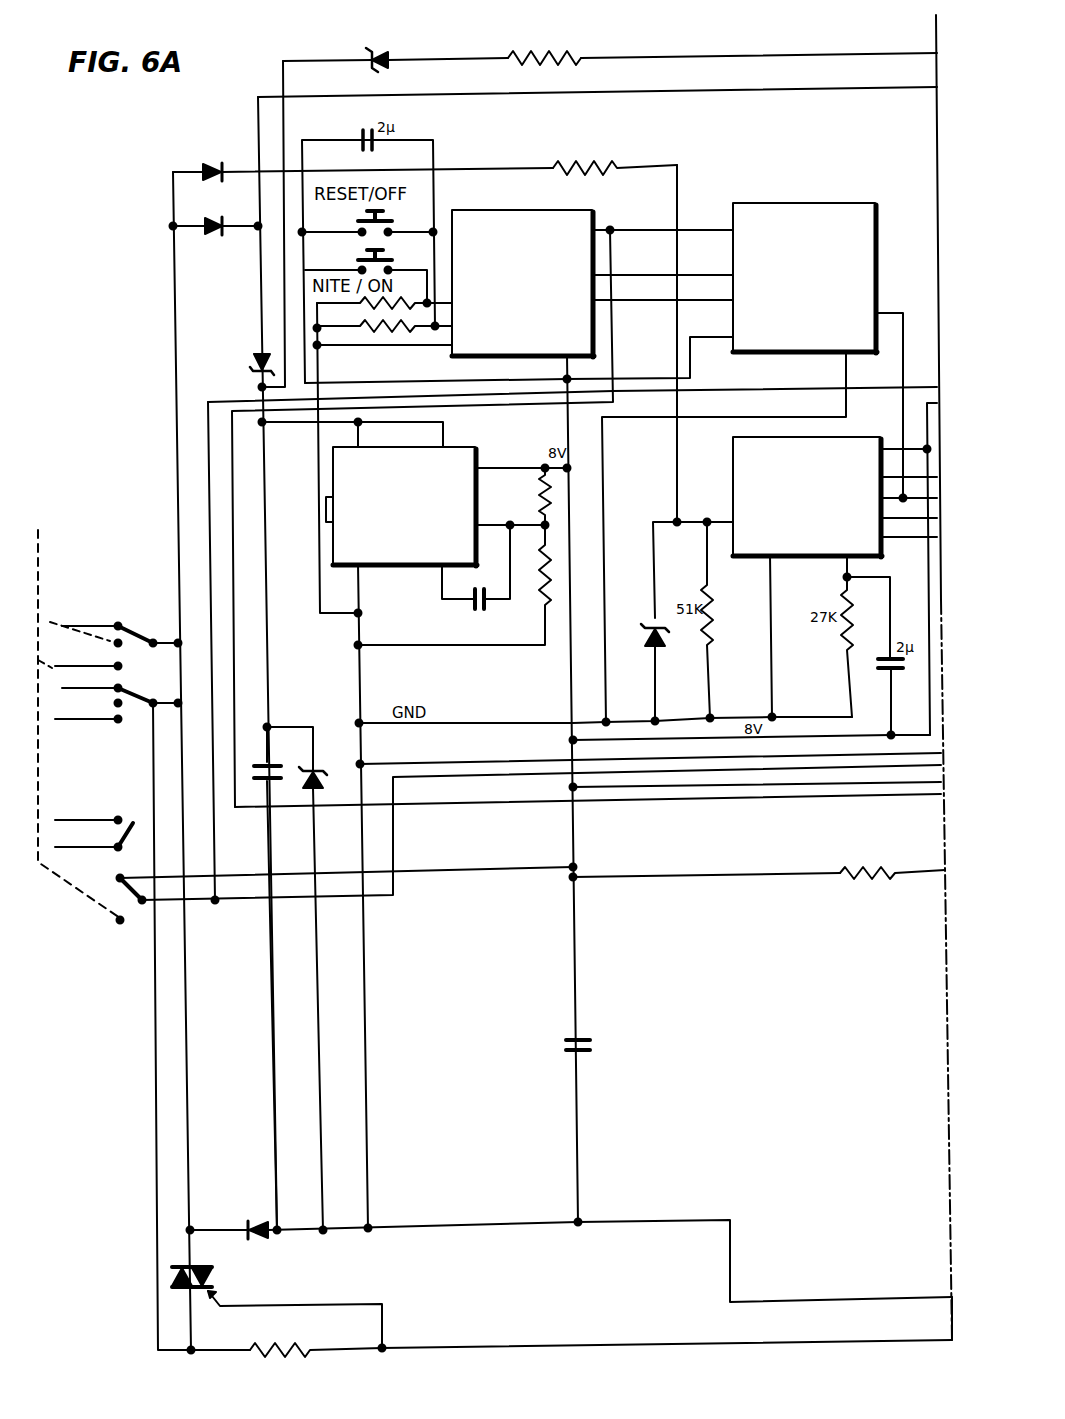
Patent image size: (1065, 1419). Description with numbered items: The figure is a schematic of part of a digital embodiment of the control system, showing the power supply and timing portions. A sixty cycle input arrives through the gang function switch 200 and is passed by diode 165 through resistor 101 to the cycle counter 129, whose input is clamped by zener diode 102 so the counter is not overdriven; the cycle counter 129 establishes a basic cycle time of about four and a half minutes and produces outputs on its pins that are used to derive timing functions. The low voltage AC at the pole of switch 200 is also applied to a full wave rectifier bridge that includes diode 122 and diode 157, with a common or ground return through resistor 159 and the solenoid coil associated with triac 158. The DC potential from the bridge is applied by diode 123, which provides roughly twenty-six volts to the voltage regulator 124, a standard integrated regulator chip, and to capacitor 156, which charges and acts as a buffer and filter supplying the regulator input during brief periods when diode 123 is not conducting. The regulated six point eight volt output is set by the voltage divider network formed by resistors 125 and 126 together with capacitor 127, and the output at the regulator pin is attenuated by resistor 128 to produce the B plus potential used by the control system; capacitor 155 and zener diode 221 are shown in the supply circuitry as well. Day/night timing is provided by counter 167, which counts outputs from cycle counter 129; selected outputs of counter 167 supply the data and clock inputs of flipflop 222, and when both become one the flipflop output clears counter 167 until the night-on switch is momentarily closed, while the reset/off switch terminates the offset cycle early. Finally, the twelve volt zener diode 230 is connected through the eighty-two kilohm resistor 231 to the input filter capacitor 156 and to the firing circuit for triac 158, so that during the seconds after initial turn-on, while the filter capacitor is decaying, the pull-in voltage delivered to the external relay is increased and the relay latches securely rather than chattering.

The zener diode 230 is at (380, 52).
The resistor 231 is at (512, 64).
The diode 165 is at (221, 162).
The diode 122 is at (215, 235).
The diode 123 is at (258, 360).
The resistor 101 is at (598, 168).
The flipflop 222 is at (546, 336).
The counter 167 is at (876, 240).
The voltage regulator 124 is at (475, 447).
The resistor 125 is at (540, 512).
The resistor 126 is at (542, 600).
The capacitor 127 is at (479, 610).
The cycle counter 129 is at (733, 452).
The zener diode 102 is at (651, 640).
The gang function switch 200 is at (131, 606).
The zener diode 221 is at (314, 978).
The capacitor 156 is at (271, 978).
The resistor 128 is at (852, 880).
The 100 microfarad capacitor 155 is at (592, 1050).
The diode 157 is at (250, 1220).
The triac 158 is at (212, 1268).
The resistor 159 is at (270, 1350).